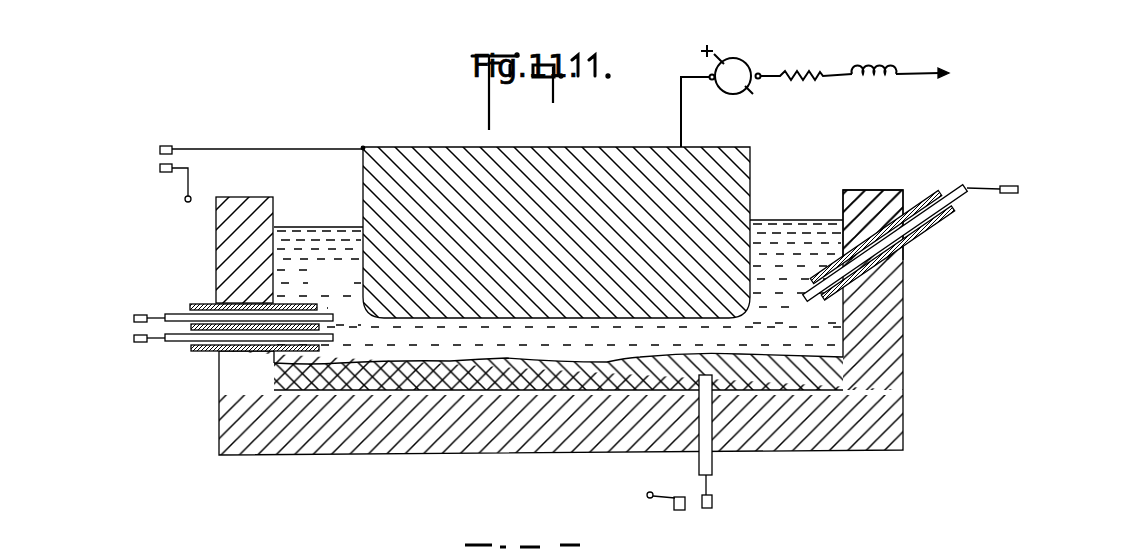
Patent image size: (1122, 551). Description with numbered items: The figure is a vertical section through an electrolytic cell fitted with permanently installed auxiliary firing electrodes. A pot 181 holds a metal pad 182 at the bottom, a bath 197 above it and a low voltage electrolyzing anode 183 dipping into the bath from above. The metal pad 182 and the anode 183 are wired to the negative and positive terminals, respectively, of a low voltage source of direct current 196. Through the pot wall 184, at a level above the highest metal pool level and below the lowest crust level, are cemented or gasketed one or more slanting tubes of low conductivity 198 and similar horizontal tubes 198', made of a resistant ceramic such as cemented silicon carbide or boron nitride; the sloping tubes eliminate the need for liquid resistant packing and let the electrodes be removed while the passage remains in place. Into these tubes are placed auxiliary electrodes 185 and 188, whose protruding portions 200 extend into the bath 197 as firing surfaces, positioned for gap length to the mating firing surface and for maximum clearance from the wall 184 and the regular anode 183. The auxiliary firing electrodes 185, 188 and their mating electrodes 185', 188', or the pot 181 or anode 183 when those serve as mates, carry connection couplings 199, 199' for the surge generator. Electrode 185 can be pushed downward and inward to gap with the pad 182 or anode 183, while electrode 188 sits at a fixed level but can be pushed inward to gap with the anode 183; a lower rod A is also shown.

The pot 181 is at (445, 440).
The metal pad 182 is at (326, 383).
The low voltage electrolyzing anode 183 is at (743, 165).
The pot wall 184 is at (880, 192).
The auxiliary electrode 185 is at (885, 217).
The mating electrode 185' is at (915, 209).
The auxiliary electrode 188 is at (233, 362).
The mating electrode 188' is at (229, 293).
The low voltage source of direct current 196 is at (740, 72).
The bath 197 is at (792, 218).
The slanting tube of low conductivity 198 is at (584, 268).
The horizontal tube 198' is at (239, 334).
The connection coupling 199 is at (597, 357).
The connection coupling 199' is at (427, 319).
The protruding portion 200 is at (331, 310).
The rod A is at (712, 474).